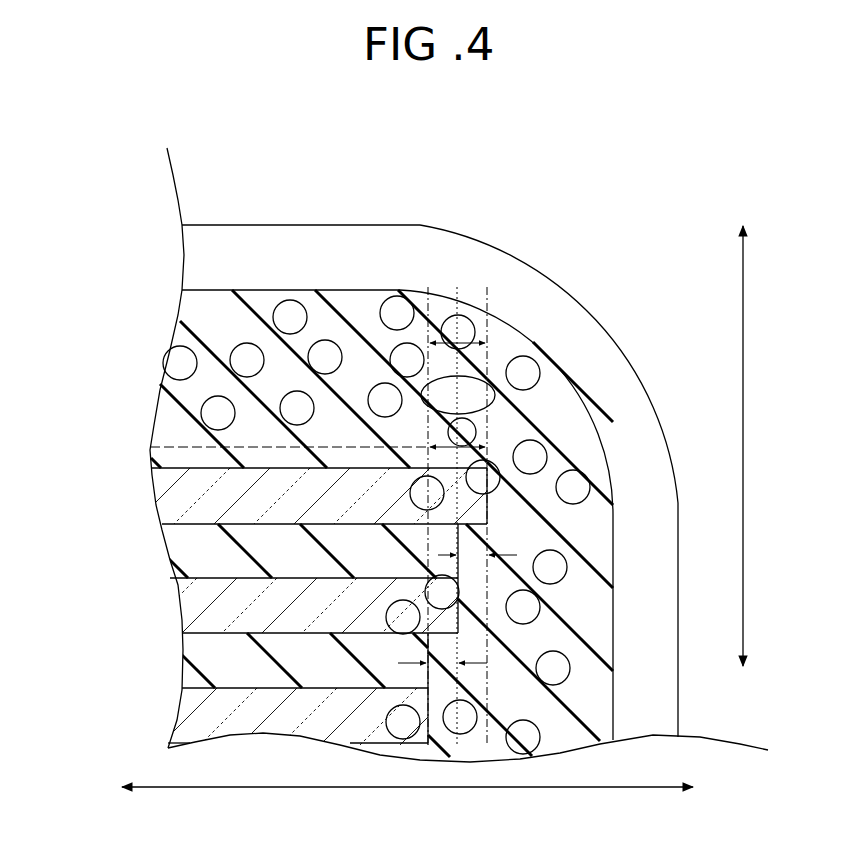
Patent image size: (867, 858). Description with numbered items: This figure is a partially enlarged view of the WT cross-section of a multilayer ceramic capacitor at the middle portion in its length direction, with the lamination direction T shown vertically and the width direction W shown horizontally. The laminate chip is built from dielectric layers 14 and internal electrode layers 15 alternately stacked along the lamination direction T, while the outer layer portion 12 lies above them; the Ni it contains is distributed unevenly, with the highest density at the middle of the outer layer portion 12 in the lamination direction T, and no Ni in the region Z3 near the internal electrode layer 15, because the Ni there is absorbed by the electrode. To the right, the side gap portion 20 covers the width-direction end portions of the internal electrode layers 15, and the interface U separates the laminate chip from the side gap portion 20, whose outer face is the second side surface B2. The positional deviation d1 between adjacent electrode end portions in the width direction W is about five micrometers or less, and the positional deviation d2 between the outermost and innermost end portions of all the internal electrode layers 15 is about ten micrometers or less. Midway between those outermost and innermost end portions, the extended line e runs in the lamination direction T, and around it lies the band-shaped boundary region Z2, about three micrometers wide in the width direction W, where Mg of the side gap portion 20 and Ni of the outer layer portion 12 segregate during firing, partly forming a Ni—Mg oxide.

The outer layer portion 12 is at (355, 317).
The dielectric layers 14 is at (392, 606).
The internal electrode layers 15 is at (453, 508).
The side gap portion 20 is at (570, 597).
The extended line e is at (462, 310).
The boundary region Z2 is at (470, 352).
The region Z3 is at (173, 458).
The positional deviation d1 is at (510, 553).
The positional deviation d2 is at (445, 432).
The second side surface B2 is at (615, 710).
The interface U is at (590, 750).
The lamination direction T is at (757, 446).
The width direction W is at (407, 803).